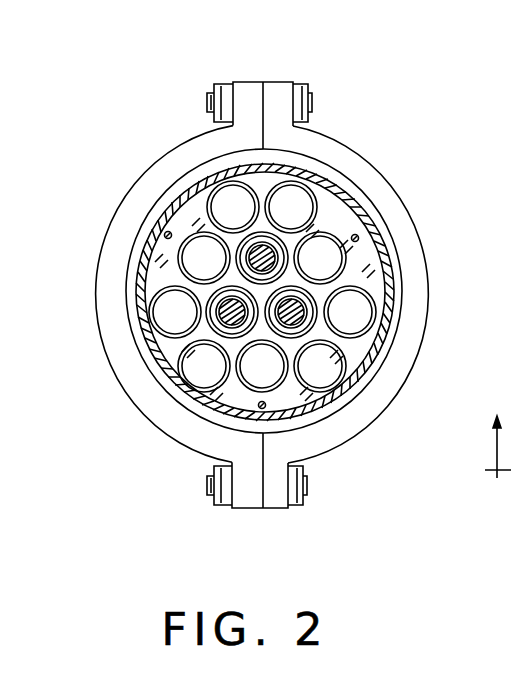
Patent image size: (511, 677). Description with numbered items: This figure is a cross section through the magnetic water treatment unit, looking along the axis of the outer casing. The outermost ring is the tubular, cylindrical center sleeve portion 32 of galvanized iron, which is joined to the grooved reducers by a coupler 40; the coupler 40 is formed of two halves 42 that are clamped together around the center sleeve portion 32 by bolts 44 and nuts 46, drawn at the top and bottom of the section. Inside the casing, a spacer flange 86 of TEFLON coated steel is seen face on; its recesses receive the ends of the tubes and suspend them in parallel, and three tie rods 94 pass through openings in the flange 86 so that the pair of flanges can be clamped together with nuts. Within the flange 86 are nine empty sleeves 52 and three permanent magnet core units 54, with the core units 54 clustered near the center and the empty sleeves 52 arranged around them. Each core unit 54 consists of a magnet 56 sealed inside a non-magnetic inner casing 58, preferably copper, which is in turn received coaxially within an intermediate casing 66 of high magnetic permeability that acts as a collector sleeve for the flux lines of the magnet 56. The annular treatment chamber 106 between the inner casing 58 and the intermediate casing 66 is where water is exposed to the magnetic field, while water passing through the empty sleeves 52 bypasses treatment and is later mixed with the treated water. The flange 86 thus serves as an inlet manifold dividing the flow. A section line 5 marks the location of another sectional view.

The coupler 40 is at (276, 82).
The bolt 44 is at (304, 90).
The nut 46 is at (224, 86).
The coupler half 42 is at (347, 162).
The spacer flange 86 is at (340, 208).
The empty sleeve 52 is at (190, 204).
The permanent magnet core unit 54 is at (340, 227).
The center sleeve portion 32 is at (145, 229).
The magnet 56 is at (266, 243).
The inner casing 58 is at (251, 249).
The annular treatment chamber 106 is at (140, 253).
The intermediate casing 66 is at (291, 238).
The tie rod 94 is at (164, 236).
The section line 5 is at (498, 435).